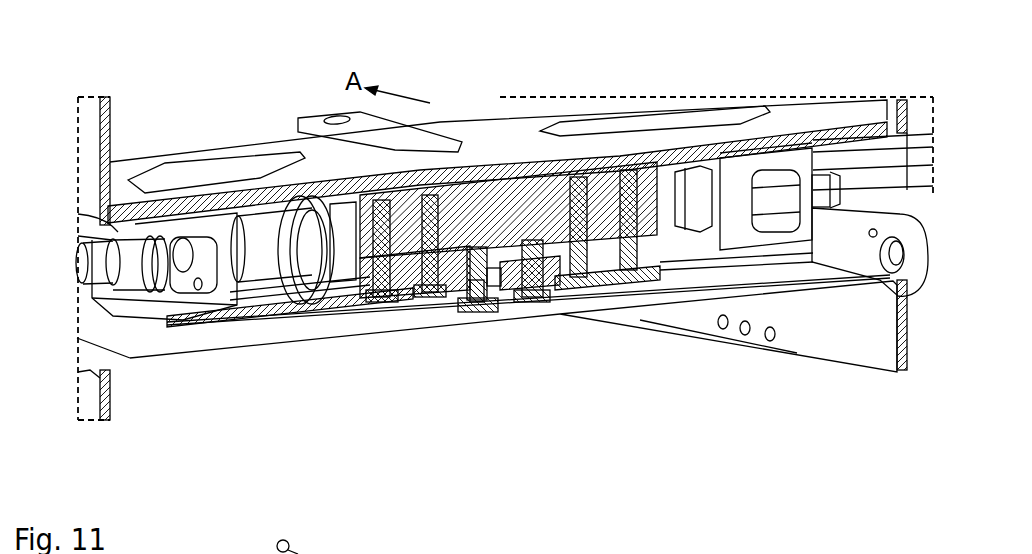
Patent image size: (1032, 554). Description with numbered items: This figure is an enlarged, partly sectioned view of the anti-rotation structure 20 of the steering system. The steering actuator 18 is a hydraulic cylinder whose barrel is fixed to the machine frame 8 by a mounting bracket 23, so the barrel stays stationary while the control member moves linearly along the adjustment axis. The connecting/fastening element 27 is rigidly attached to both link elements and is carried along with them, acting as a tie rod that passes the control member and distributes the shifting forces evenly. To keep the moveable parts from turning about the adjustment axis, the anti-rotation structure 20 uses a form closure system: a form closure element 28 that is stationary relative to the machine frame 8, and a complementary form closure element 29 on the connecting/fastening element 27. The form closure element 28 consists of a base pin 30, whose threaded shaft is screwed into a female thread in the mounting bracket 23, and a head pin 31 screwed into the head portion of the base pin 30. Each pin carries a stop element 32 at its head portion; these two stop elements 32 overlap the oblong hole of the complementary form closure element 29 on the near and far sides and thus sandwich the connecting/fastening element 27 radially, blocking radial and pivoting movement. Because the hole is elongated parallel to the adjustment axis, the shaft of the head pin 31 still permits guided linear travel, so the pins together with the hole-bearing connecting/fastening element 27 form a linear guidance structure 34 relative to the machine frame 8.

The machine frame 8 is at (557, 207).
The steering actuator 18 is at (320, 285).
The anti-rotation structure 20 is at (522, 328).
The mounting bracket 23 is at (347, 263).
The connecting/fastening element 27 is at (287, 308).
The form closure element 28 is at (477, 305).
The complementary form closure element 29 is at (430, 298).
The base pin 30 is at (478, 263).
The head pin 31 is at (495, 278).
The stop element 32 is at (475, 307).
The linear guidance structure 34 is at (468, 385).